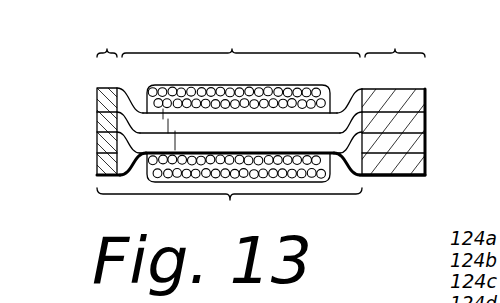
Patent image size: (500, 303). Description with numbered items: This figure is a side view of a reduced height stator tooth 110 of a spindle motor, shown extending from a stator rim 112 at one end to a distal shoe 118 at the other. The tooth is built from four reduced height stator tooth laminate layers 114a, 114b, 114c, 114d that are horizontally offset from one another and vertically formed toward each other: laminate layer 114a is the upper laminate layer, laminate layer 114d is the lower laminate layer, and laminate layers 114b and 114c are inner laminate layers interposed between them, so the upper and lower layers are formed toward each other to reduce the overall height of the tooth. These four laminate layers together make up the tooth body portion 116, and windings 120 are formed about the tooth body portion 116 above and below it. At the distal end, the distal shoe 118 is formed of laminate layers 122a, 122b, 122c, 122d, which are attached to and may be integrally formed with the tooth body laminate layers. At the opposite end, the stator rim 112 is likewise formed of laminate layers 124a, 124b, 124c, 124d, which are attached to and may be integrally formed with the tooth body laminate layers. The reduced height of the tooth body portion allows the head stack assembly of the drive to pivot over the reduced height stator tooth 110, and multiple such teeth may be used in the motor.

The reduced height stator tooth 110 is at (229, 210).
The stator rim 112 is at (393, 95).
The reduced height stator tooth laminate layer 114a is at (135, 99).
The reduced height stator tooth laminate layer 114b is at (358, 118).
The reduced height stator tooth laminate layer 114c is at (240, 129).
The reduced height stator tooth laminate layer 114d is at (240, 144).
The tooth body portion 116 is at (241, 36).
The distal shoe 118 is at (107, 96).
The windings 120 is at (241, 86).
The laminate layer 122a is at (97, 99).
The laminate layer 122b is at (97, 121).
The laminate layer 122c is at (97, 143).
The laminate layer 122d is at (97, 165).
The laminate layer 124a is at (427, 101).
The laminate layer 124b is at (427, 123).
The laminate layer 124c is at (427, 144).
The laminate layer 124d is at (427, 168).